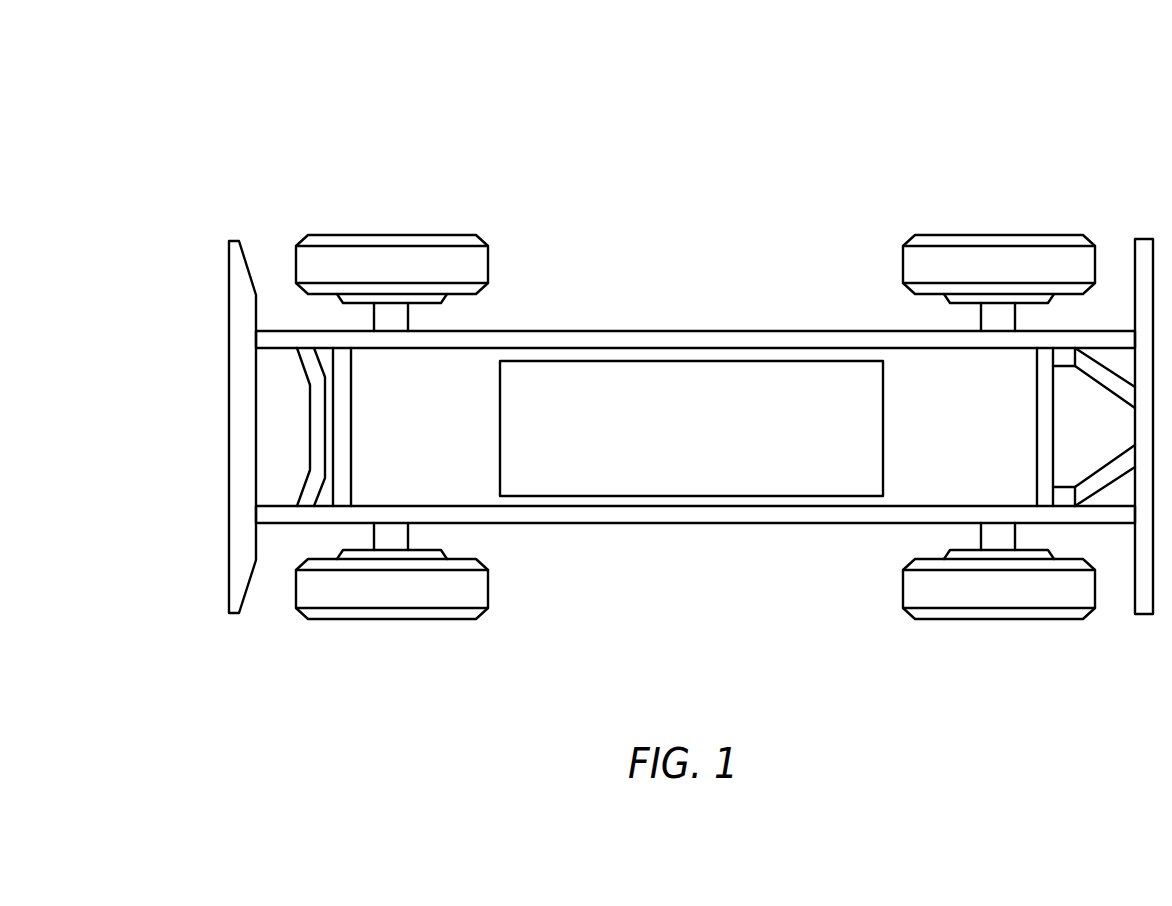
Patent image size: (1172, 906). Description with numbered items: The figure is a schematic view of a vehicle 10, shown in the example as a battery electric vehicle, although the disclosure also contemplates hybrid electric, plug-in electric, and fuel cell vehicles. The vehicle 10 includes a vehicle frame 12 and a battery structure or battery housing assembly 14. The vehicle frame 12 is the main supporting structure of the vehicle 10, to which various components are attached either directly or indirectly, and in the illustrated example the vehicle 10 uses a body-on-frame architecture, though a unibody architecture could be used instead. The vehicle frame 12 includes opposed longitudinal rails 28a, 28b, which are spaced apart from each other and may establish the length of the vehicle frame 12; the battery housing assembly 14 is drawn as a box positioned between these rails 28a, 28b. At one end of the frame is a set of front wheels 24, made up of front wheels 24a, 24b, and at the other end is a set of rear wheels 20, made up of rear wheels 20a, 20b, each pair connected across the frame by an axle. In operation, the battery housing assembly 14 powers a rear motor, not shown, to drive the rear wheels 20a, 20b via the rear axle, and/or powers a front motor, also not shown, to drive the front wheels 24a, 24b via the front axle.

The vehicle 10 is at (248, 107).
The vehicle frame 12 is at (762, 255).
The battery housing assembly 14 is at (779, 388).
The set of rear wheels 20 is at (950, 202).
The rear wheel 20a is at (1030, 240).
The rear wheel 20b is at (986, 597).
The set of front wheels 24 is at (373, 203).
The front wheel 24a is at (458, 240).
The front wheel 24b is at (381, 592).
The longitudinal rail 28a is at (561, 332).
The longitudinal rail 28b is at (708, 523).